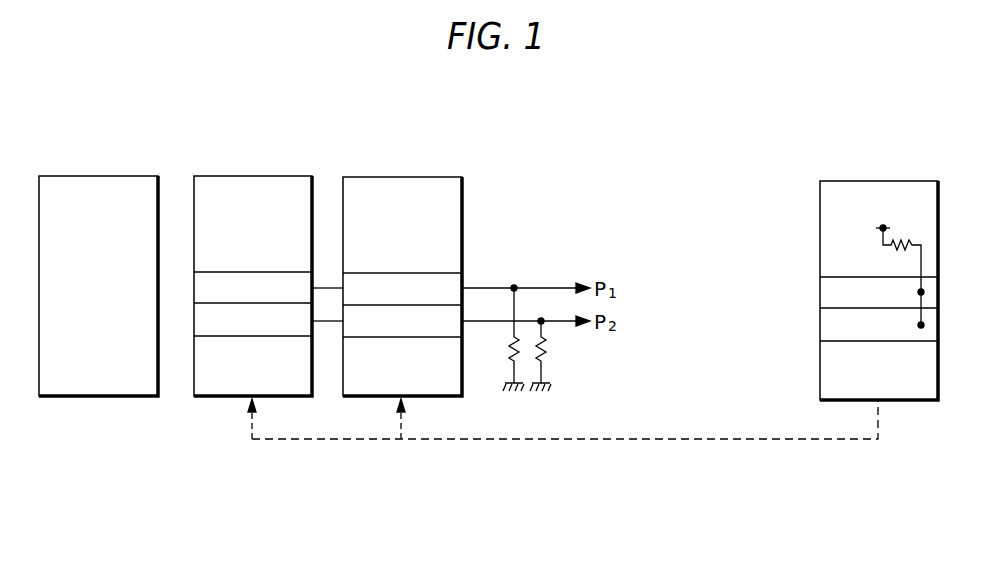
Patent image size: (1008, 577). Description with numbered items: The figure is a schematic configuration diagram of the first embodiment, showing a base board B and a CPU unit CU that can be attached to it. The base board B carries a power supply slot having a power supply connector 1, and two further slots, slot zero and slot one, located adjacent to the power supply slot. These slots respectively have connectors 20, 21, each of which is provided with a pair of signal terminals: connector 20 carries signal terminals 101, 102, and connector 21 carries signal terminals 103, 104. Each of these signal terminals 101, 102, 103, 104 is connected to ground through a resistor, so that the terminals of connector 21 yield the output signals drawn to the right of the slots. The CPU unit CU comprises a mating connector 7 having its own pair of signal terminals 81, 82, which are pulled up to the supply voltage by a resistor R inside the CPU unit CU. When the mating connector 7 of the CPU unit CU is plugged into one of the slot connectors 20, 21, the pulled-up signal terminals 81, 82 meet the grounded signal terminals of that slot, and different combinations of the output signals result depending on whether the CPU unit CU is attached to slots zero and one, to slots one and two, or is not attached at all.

The power supply connector 1 is at (97, 180).
The connector of slot 0 20 is at (253, 180).
The connector of slot 1 21 is at (402, 181).
The signal terminal 101 is at (213, 294).
The signal terminal 102 is at (216, 330).
The signal terminal 103 is at (456, 284).
The signal terminal 104 is at (439, 337).
The mating connector 7 is at (820, 204).
The signal terminal 81 is at (820, 292).
The signal terminal 82 is at (820, 326).
The base board B is at (547, 163).
The CPU unit CU is at (852, 256).
The resistor R is at (878, 266).